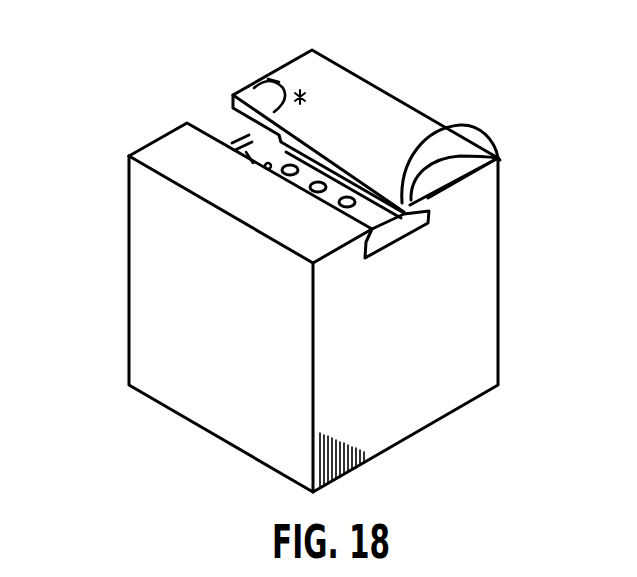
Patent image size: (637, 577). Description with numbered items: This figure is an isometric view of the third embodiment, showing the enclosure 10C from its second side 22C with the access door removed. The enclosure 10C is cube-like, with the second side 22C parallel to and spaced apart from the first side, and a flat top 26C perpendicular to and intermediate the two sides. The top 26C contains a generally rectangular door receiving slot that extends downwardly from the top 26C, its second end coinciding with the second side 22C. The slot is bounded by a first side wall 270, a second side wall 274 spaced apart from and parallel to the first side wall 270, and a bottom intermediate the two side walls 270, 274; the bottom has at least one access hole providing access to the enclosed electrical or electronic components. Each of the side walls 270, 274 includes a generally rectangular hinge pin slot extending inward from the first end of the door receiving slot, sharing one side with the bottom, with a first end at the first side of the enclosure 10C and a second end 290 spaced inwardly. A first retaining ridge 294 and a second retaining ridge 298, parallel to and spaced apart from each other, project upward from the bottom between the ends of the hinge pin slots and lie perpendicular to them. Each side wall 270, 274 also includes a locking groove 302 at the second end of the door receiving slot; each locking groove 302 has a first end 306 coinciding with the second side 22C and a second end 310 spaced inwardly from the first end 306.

The enclosure 10C is at (126, 277).
The second side 22C is at (480, 288).
The flat top 26C is at (383, 118).
The first side wall 270 is at (403, 196).
The second side wall 274 is at (268, 170).
The second end 290 is at (367, 183).
The first retaining ridge 294 is at (238, 137).
The second retaining ridge 298 is at (250, 165).
The locking groove 302 is at (500, 158).
The first end 306 is at (428, 212).
The second end 310 is at (405, 200).